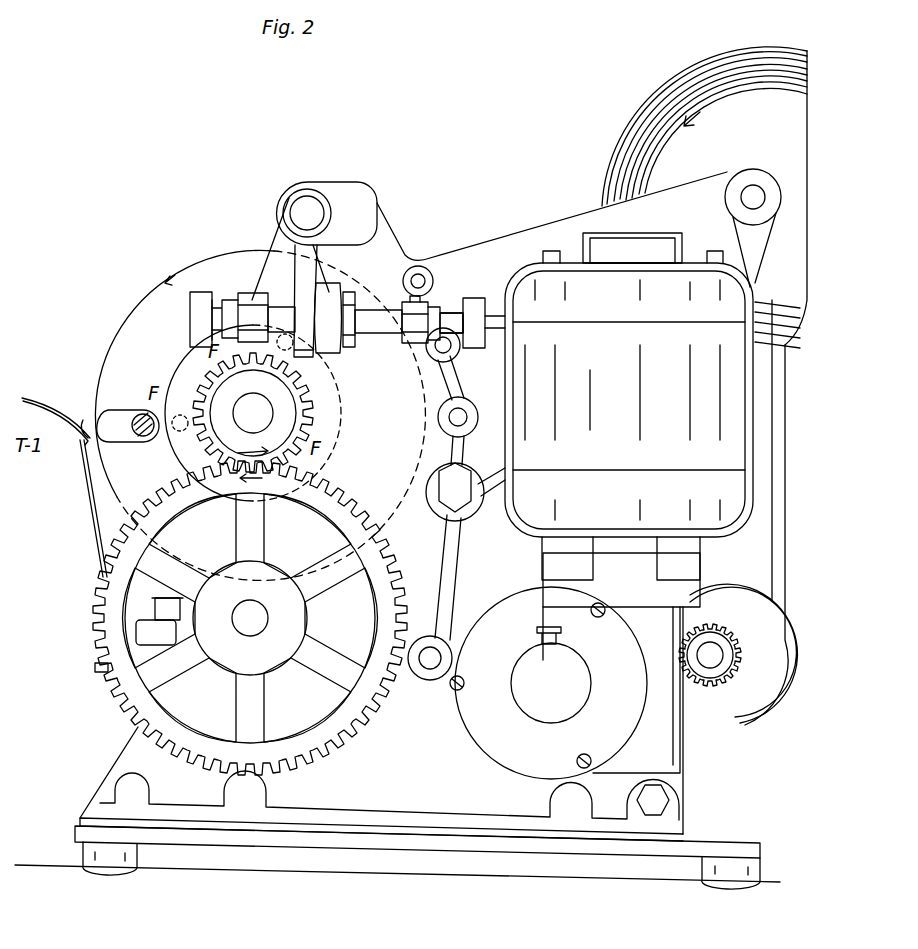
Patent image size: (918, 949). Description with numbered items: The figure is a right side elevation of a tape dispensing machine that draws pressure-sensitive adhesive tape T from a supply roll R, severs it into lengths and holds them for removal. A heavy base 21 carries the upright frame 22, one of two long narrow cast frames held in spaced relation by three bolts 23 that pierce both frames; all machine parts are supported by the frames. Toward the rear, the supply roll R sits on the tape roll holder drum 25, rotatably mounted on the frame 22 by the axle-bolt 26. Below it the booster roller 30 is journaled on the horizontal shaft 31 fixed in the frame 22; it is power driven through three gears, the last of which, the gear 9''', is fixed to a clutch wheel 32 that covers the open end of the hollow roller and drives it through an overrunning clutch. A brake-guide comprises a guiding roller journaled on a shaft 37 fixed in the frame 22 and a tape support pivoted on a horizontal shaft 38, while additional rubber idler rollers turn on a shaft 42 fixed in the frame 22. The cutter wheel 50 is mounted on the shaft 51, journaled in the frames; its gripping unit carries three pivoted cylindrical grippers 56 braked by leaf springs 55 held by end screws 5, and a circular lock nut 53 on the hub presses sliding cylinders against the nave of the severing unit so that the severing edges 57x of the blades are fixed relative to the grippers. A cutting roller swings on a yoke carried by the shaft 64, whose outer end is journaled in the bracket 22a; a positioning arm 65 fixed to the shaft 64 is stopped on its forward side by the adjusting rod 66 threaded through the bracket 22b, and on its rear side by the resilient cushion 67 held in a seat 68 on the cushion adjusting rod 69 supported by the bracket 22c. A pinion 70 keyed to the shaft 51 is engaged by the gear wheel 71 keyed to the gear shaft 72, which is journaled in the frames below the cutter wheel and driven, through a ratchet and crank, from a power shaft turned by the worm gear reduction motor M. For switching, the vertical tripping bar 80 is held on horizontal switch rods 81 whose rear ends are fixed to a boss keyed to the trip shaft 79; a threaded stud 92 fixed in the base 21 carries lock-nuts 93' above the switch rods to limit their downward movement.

The base 21 is at (328, 842).
The upright frame 22 is at (545, 232).
The bracket 22a is at (346, 192).
The bracket 22b is at (250, 300).
The bracket 22c is at (414, 336).
The bolts 23 is at (660, 802).
The tape roll holder drum 25 is at (742, 100).
The axle-bolt 26 is at (754, 190).
The booster roller 30 is at (742, 588).
The horizontal shaft 31 is at (705, 650).
The clutch wheel 32 is at (760, 690).
The shaft 37 is at (452, 352).
The horizontal shaft 38 is at (460, 415).
The shaft 42 is at (432, 283).
The cutter wheel 50 is at (140, 288).
The shaft 51 is at (256, 410).
The circular lock nut 53 is at (188, 376).
The leaf springs 55 is at (118, 437).
The grippers 56 is at (86, 428).
The severing edges 57x is at (262, 252).
The yoke-supporting shaft 64 is at (304, 208).
The positioning arm 65 is at (304, 350).
The adjusting rod 66 is at (283, 307).
The cushion 67 is at (332, 292).
The seat 68 is at (356, 304).
The cushion adjusting rod 69 is at (378, 333).
The pinion 70 is at (306, 426).
The gear wheel 71 is at (96, 605).
The gear shaft 72 is at (252, 612).
The trip shaft 79 is at (430, 664).
The tripping bar 80 is at (82, 463).
The switch rods 81 is at (95, 668).
The threaded stud 92 is at (158, 612).
The lock-nuts 93' is at (162, 646).
The end screw 5 is at (140, 420).
The gear g''' 9''' is at (710, 673).
The worm gear reduction motor M is at (632, 245).
The supply roll R is at (642, 100).
The pressure-sensitive adhesive tape T is at (786, 510).